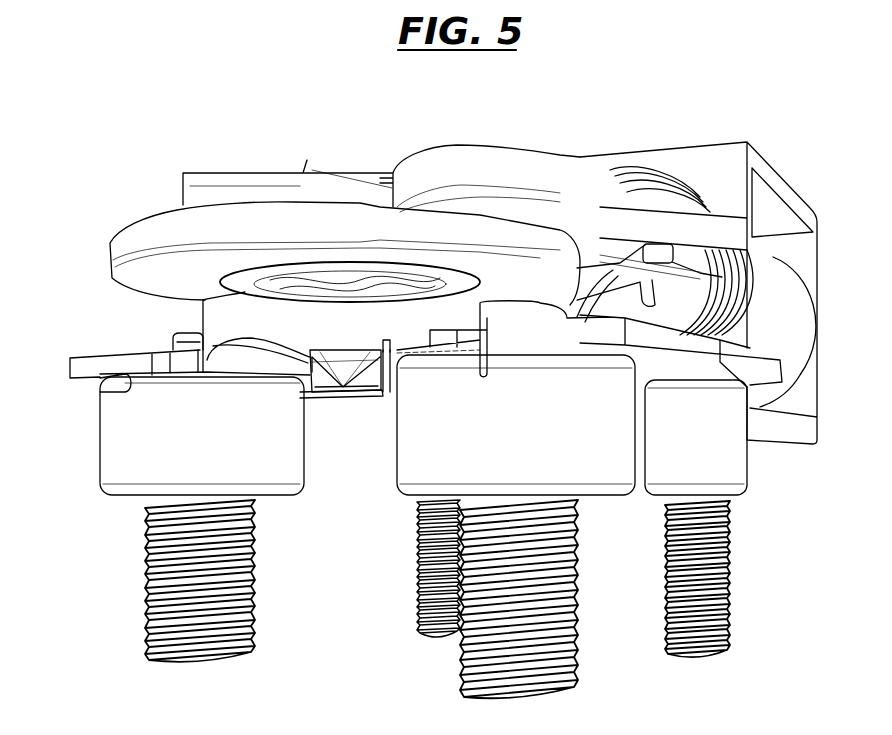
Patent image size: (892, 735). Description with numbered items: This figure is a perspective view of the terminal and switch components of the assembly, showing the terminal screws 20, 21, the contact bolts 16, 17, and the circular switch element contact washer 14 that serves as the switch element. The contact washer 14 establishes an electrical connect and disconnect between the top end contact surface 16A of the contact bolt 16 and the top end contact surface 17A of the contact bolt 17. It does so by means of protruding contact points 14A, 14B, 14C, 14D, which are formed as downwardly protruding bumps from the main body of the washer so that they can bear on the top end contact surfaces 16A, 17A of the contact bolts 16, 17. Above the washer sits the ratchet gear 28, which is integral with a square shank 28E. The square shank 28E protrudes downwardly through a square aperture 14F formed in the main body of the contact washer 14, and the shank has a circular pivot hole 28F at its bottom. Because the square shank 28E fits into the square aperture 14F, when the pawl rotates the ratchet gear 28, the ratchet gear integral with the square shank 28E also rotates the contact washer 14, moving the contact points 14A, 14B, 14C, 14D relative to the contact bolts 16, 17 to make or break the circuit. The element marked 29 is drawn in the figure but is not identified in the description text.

The contact washer 14 is at (212, 321).
The protruding contact point 14A is at (300, 358).
The protruding contact point 14B is at (218, 358).
The protruding contact point 14C is at (390, 372).
The protruding contact point 14D is at (475, 364).
The square aperture 14F is at (387, 353).
The contact bolt 16 is at (150, 562).
The top end contact surface 16A is at (100, 392).
The contact bolt 17 is at (575, 597).
The top end contact surface 17A is at (567, 347).
The terminal screw 20 is at (440, 622).
The terminal screw 21 is at (717, 590).
The ratchet gear 28 is at (183, 232).
The square shank 28E is at (343, 378).
The circular pivot hole 28F is at (348, 352).
The spring washer 29 is at (272, 275).